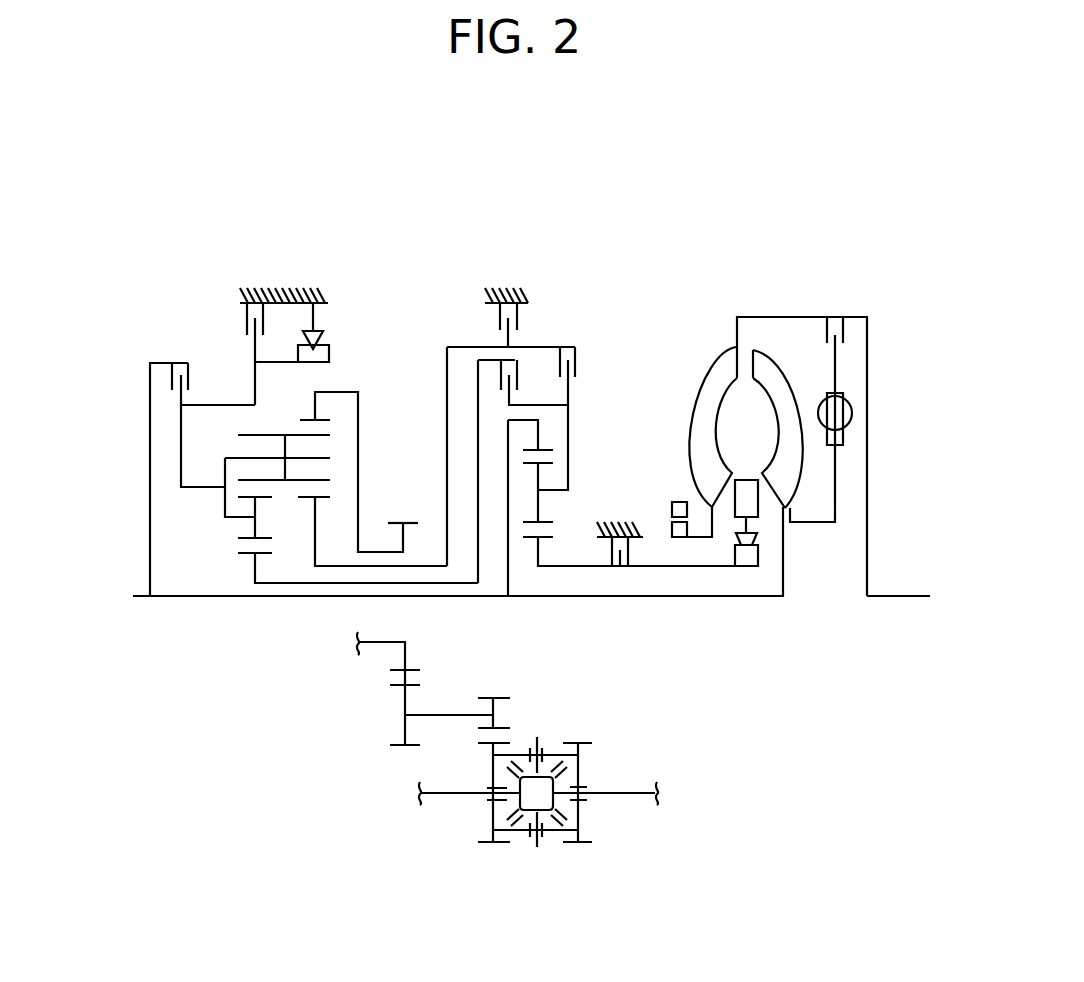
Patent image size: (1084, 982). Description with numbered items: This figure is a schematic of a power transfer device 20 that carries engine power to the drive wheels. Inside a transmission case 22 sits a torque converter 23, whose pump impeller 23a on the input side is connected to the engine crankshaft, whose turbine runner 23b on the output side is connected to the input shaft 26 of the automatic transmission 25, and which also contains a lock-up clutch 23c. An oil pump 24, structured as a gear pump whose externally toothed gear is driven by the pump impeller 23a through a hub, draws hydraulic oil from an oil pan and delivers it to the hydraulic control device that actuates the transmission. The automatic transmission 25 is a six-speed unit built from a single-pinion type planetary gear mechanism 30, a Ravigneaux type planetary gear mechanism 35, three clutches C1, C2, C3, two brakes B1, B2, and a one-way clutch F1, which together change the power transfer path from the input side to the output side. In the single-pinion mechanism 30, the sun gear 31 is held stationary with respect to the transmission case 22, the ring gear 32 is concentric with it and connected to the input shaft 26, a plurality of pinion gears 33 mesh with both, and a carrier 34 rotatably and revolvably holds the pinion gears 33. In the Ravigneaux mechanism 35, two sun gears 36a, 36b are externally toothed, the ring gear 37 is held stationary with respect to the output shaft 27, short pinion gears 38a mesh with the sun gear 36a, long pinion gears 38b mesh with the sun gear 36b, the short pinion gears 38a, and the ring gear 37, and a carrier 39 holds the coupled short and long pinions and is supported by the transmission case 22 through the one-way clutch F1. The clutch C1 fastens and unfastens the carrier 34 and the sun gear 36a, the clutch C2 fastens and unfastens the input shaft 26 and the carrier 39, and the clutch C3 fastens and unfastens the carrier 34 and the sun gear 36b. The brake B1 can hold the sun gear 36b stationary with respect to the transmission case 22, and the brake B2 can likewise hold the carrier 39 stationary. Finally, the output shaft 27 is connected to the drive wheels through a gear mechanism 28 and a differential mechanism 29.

The power transfer device 20 is at (516, 251).
The transmission case 22 is at (263, 288).
The torque converter 23 is at (735, 342).
The pump impeller 23a is at (712, 375).
The turbine runner 23b is at (783, 380).
The lock-up clutch 23c is at (857, 369).
The oil pump 24 is at (658, 541).
The automatic transmission 25 is at (412, 309).
The input shaft 26 is at (700, 596).
The output shaft 27 is at (380, 552).
The gear mechanism 28 is at (379, 703).
The differential mechanism 29 is at (608, 754).
The single-pinion type planetary gear mechanism 30 is at (598, 426).
The sun gear 31 is at (523, 538).
The ring gear 32 is at (543, 448).
The pinion gears 33 is at (540, 500).
The carrier 34 is at (572, 450).
The Ravigneaux type planetary gear mechanism 35 is at (213, 558).
The sun gear 36a is at (240, 557).
The sun gear 36b is at (310, 498).
The ring gear 37 is at (330, 420).
The short pinion gears 38a is at (255, 525).
The long pinion gears 38b is at (245, 435).
The carrier 39 is at (182, 453).
The brake B1 is at (518, 323).
The brake B2 is at (245, 327).
The clutch C1 is at (500, 380).
The clutch C2 is at (158, 363).
The clutch C3 is at (577, 367).
The one-way clutch F1 is at (333, 350).